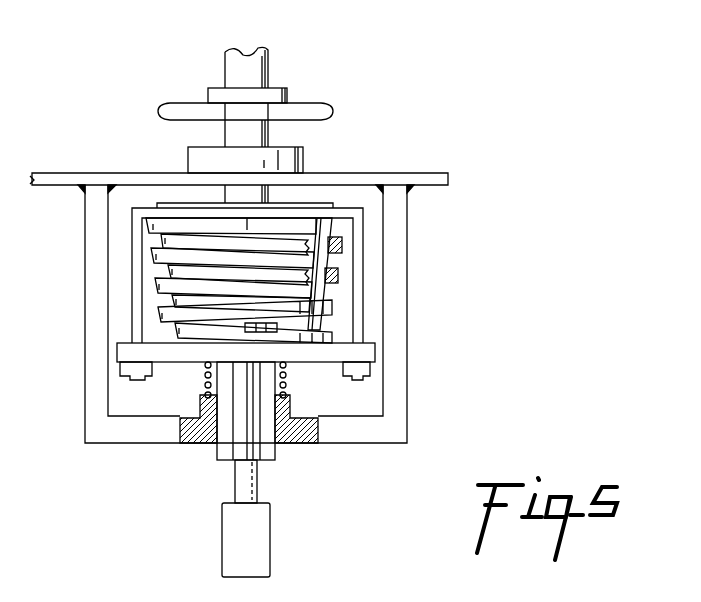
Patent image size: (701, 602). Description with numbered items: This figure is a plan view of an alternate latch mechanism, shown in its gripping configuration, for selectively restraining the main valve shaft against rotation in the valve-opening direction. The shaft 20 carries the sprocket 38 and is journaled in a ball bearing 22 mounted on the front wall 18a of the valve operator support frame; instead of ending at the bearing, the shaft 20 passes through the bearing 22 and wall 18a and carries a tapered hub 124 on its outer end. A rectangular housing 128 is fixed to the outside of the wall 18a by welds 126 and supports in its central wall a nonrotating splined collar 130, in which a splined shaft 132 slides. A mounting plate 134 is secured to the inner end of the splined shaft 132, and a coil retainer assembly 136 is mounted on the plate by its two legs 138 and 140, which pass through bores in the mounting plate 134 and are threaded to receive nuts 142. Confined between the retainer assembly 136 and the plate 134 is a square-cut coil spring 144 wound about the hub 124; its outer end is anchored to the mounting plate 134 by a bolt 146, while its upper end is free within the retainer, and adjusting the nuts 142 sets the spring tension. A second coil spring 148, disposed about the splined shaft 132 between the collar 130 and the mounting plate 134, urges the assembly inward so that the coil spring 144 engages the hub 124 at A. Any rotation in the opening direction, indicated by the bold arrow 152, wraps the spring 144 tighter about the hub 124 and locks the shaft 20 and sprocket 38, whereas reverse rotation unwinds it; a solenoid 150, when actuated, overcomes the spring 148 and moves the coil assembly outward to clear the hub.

The shaft 20 is at (270, 68).
The sprocket 38 is at (186, 102).
The ball bearing 22 is at (306, 152).
The front wall 18a is at (362, 178).
The welds 126 is at (82, 192).
The rectangular housing 128 is at (398, 317).
The coil retainer assembly 136 is at (156, 203).
The leg 138 is at (130, 295).
The square-cut coil spring 144 is at (152, 255).
The tapered hub 124 is at (316, 232).
The leg 140 is at (365, 292).
The engagement location A is at (342, 277).
The bolt 146 is at (278, 326).
The mounting plate 134 is at (197, 353).
The nuts 142 is at (118, 372).
The second coil spring 148 is at (286, 388).
The splined shaft 132 is at (255, 437).
The splined collar 130 is at (212, 447).
The solenoid 150 is at (222, 523).
The arrow 152 is at (252, 31).